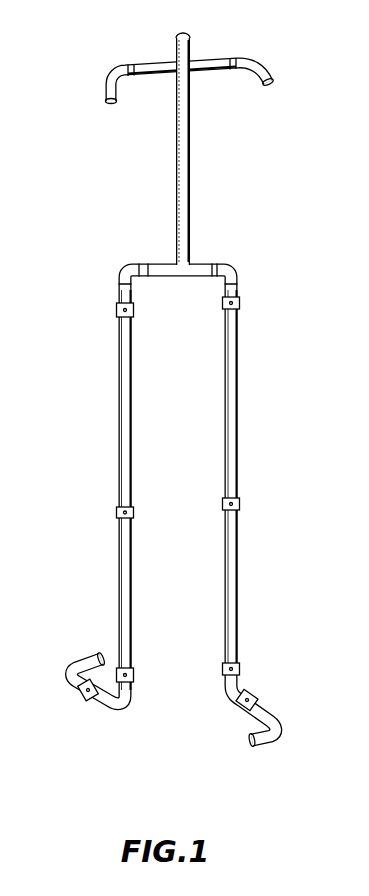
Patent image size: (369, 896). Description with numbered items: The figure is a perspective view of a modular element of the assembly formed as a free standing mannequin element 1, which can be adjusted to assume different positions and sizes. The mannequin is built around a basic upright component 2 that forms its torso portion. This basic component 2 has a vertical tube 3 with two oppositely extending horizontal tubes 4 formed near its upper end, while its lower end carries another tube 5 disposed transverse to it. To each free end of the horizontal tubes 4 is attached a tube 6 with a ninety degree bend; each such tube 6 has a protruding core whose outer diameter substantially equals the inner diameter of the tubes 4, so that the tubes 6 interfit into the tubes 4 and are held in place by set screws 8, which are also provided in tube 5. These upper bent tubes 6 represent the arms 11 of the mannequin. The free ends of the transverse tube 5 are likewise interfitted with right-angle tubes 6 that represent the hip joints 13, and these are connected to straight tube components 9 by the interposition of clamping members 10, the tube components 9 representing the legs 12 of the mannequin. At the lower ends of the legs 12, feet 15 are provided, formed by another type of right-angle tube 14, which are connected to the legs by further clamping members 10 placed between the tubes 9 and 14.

The mannequin element 1 is at (240, 259).
The basic upright component 2 is at (192, 180).
The vertical tube 3 is at (177, 157).
The horizontal tubes 4 is at (151, 62).
The tube 5 is at (158, 266).
The tube with 90° bend 6 is at (106, 90).
The set screws 8 is at (133, 78).
The straight tube components 9 is at (120, 392).
The clamping members 10 is at (118, 320).
The arms 11 is at (230, 55).
The legs 12 is at (240, 454).
The hip joints 13 is at (117, 272).
The right-angle tube 14 is at (70, 683).
The feet 15 is at (267, 745).